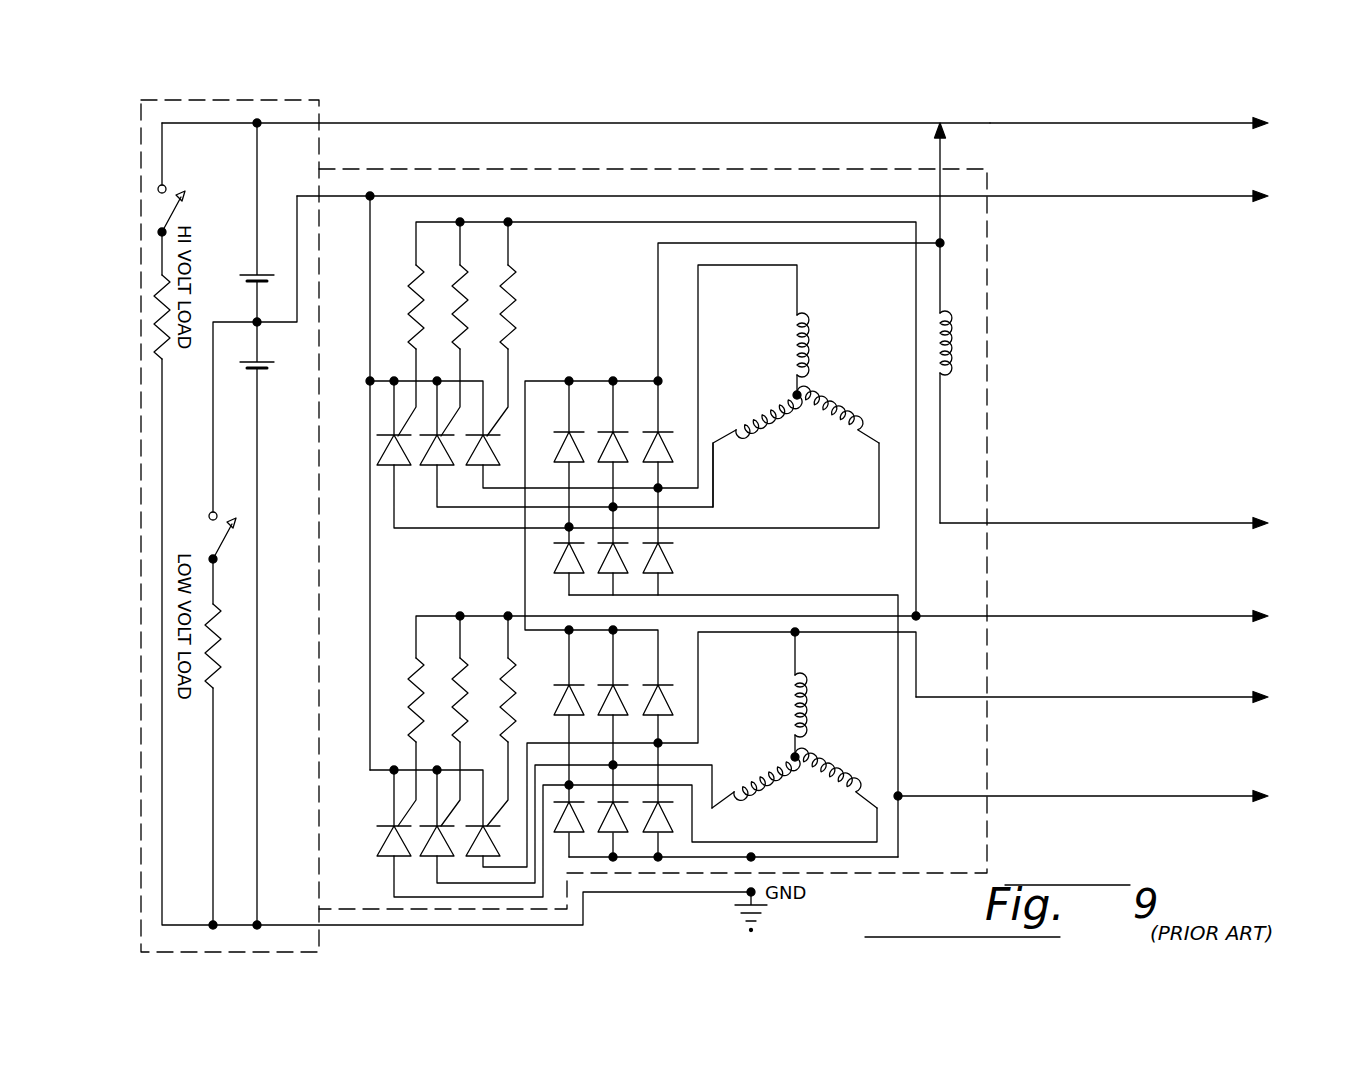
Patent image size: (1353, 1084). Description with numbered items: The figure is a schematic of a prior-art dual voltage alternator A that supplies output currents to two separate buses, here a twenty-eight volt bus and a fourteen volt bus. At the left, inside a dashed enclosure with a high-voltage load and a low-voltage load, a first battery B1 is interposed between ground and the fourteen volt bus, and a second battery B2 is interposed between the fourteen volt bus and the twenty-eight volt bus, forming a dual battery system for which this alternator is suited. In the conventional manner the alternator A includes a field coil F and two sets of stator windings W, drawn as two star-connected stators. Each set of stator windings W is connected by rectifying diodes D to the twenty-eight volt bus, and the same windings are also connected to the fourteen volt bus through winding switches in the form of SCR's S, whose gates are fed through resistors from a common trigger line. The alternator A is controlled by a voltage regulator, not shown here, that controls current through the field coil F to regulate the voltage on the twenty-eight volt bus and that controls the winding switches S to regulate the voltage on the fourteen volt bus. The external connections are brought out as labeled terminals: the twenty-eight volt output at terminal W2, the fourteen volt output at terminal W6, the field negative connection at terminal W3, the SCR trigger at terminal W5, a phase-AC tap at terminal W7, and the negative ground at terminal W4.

The dual voltage alternator A is at (726, 116).
The first battery B1 is at (263, 623).
The second battery B2 is at (263, 222).
The winding switches (SCR's) S is at (353, 444).
The rectifying diodes D is at (612, 372).
The stator windings W is at (788, 330).
The field coil F is at (930, 330).
The 28 V output terminal W2 is at (1165, 116).
The 14 V output terminal W6 is at (819, 189).
The field negative terminal W3 is at (1140, 517).
The SCR trigger terminal W5 is at (1126, 609).
The phase AC terminal W7 is at (1128, 691).
The negative ground terminal W4 is at (1119, 790).